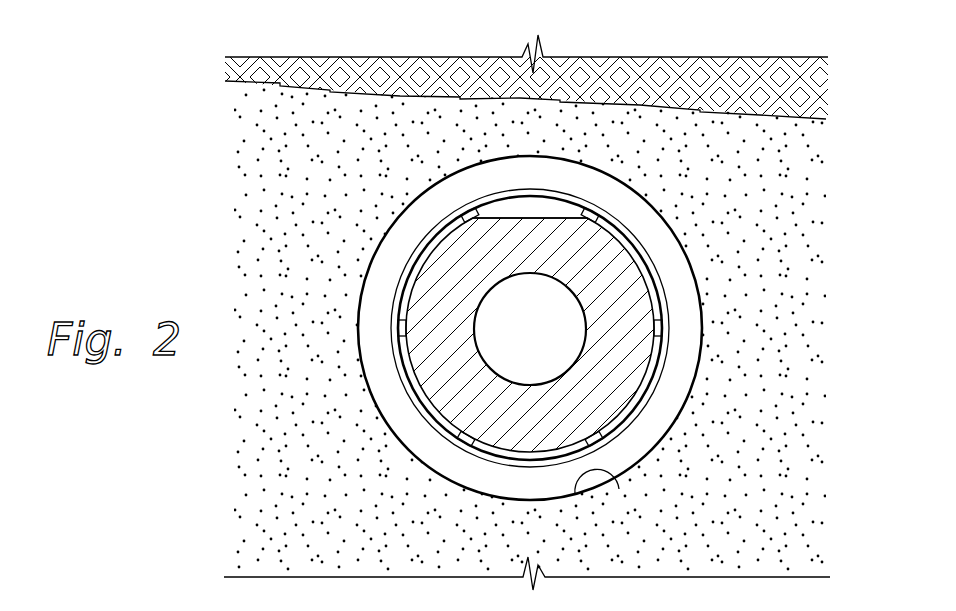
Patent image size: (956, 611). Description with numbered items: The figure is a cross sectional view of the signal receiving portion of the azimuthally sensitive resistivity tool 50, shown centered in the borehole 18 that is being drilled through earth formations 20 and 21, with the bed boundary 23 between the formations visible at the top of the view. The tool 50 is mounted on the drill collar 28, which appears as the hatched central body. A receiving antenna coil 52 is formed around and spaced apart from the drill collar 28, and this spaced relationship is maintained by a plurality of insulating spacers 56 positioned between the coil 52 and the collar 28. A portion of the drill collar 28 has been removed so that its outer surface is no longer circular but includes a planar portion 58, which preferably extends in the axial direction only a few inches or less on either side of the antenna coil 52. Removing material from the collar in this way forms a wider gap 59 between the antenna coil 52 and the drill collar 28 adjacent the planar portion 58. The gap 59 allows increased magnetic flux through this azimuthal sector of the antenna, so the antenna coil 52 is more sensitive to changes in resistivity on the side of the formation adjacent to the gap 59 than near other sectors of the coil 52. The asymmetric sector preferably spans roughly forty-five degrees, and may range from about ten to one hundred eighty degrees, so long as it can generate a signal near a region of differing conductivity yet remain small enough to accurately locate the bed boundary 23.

The earth formation 20 is at (683, 63).
The earth formation 21 is at (335, 532).
The bed boundary 23 is at (355, 97).
The azimuthally sensitive resistivity tool 50 is at (648, 232).
The receiving antenna coil 52 is at (415, 250).
The gap 59 is at (553, 208).
The drill collar 28 is at (437, 372).
The planar portion 58 is at (497, 218).
The insulating spacers 56 is at (660, 329).
The borehole 18 is at (611, 483).